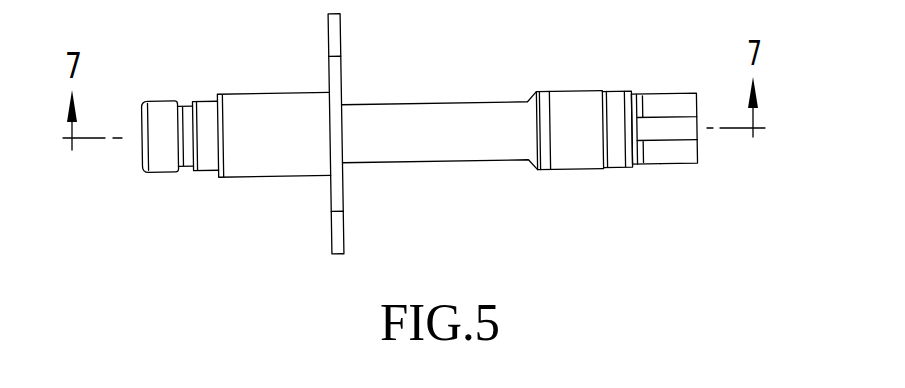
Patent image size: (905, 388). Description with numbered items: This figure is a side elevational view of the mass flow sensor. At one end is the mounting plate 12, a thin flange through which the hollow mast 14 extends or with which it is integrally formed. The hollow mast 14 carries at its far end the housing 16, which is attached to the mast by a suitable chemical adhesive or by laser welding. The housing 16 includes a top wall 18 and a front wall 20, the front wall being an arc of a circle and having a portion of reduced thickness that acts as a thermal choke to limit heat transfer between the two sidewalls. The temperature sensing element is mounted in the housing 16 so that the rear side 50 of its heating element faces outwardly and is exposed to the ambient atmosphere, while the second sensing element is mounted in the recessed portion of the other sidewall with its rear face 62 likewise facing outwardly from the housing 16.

The mounting plate 12 is at (343, 245).
The hollow mast 14 is at (441, 158).
The housing 16 is at (574, 165).
The top wall 18 is at (697, 130).
The front wall 20 is at (653, 130).
The rear side of heating element 50 is at (672, 98).
The rear face 62 is at (692, 155).